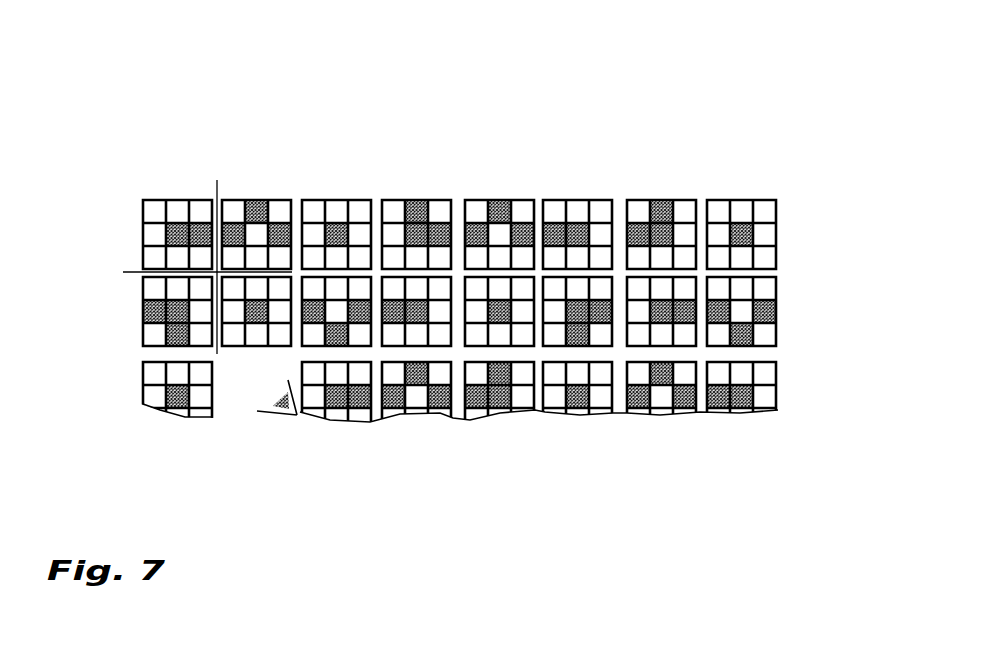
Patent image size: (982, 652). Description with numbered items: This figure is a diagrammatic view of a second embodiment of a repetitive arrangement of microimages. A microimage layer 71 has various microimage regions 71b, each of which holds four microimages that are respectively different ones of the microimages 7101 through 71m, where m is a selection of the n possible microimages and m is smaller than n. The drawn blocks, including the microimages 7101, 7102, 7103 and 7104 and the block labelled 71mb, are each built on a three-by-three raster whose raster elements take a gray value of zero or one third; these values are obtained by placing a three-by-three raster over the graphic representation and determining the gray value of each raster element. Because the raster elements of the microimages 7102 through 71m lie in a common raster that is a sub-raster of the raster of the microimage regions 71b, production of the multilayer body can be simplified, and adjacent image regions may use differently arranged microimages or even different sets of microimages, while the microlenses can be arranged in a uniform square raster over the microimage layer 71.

The microimage layer 71 is at (468, 230).
The microimage 71m is at (782, 273).
The macro pixel block 71mb is at (299, 149).
The microimage region 71b is at (538, 192).
The microimage 7101 is at (292, 197).
The microimage 7102 is at (138, 200).
The microimage 7103 is at (138, 277).
The microimage 7104 is at (290, 348).